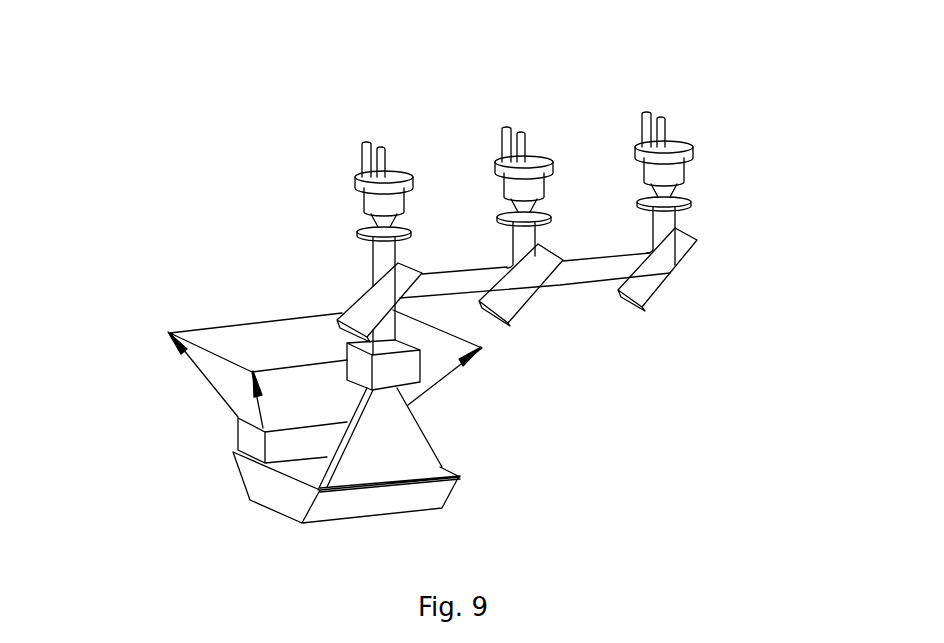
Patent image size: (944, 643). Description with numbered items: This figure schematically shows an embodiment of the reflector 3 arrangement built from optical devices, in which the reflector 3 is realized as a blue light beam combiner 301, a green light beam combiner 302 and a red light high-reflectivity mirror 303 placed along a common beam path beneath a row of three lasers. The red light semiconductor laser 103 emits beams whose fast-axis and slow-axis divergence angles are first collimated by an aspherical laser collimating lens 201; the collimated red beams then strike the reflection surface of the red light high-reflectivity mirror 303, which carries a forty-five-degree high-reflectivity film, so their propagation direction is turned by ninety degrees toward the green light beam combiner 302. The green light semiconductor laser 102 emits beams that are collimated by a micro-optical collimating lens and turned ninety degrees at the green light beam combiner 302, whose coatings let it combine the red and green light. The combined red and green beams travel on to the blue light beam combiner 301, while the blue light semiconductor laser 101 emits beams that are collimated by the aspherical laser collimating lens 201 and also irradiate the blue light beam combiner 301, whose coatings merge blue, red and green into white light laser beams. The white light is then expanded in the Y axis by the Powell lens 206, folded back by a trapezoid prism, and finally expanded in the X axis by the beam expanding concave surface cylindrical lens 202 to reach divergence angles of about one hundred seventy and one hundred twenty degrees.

The blue light semiconductor laser 101 is at (416, 184).
The green light semiconductor laser 102 is at (558, 164).
The red light semiconductor laser 103 is at (698, 152).
The aspherical laser collimating lens 201 is at (693, 203).
The blue light beam combiner 301 is at (352, 299).
The green light beam combiner 302 is at (527, 314).
The red light high-reflectivity mirror 303 is at (660, 292).
The beam expanding concave surface cylindrical lens 202 is at (238, 438).
The Powell lens 206 is at (410, 372).
The reflector 3 is at (268, 493).